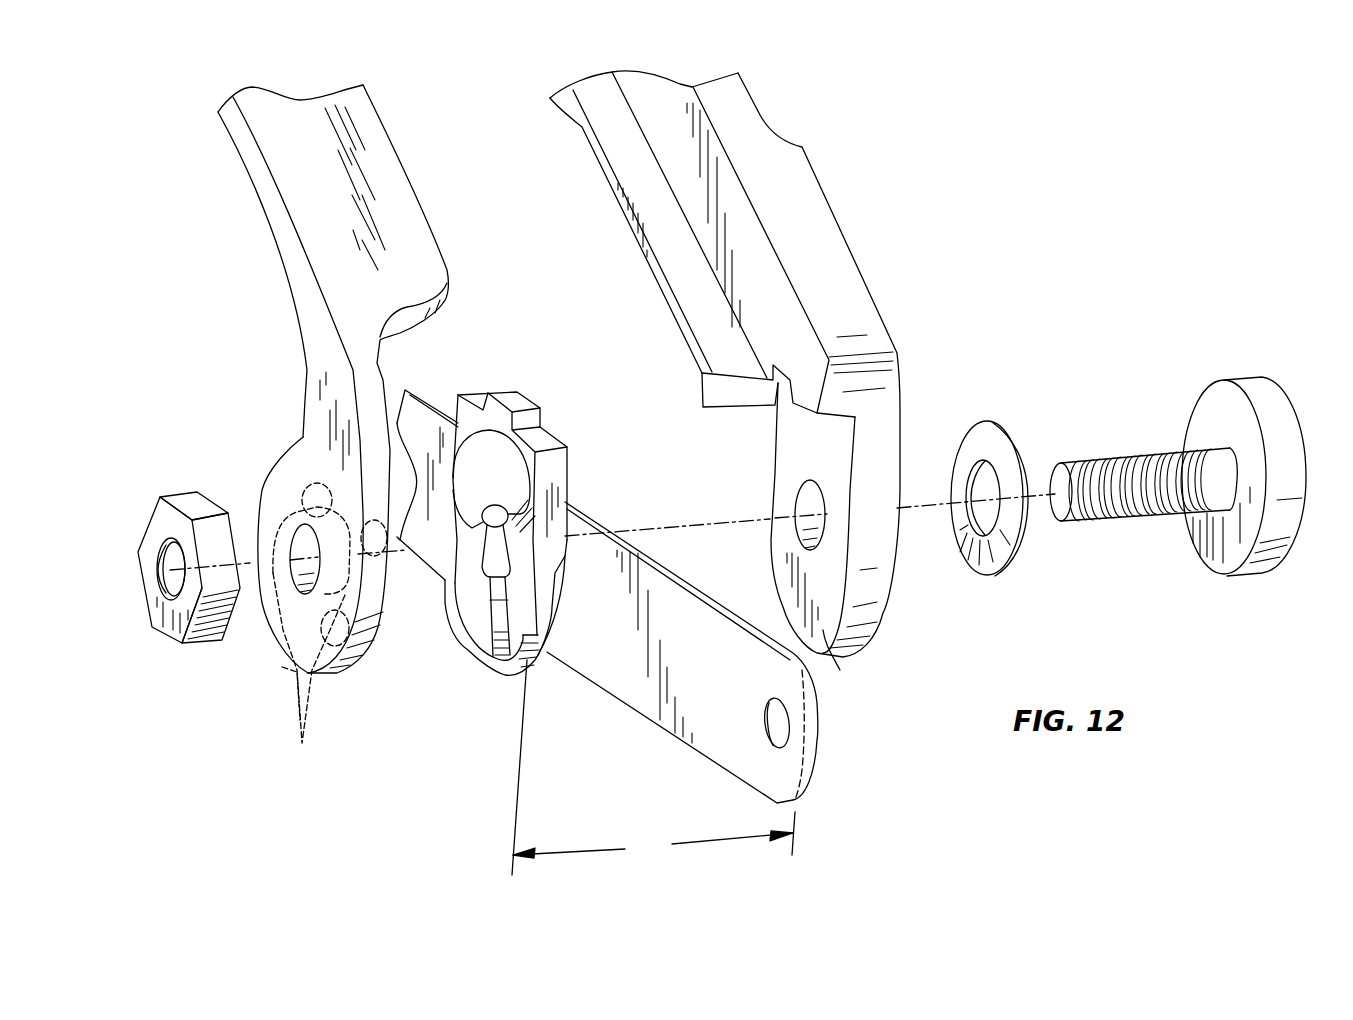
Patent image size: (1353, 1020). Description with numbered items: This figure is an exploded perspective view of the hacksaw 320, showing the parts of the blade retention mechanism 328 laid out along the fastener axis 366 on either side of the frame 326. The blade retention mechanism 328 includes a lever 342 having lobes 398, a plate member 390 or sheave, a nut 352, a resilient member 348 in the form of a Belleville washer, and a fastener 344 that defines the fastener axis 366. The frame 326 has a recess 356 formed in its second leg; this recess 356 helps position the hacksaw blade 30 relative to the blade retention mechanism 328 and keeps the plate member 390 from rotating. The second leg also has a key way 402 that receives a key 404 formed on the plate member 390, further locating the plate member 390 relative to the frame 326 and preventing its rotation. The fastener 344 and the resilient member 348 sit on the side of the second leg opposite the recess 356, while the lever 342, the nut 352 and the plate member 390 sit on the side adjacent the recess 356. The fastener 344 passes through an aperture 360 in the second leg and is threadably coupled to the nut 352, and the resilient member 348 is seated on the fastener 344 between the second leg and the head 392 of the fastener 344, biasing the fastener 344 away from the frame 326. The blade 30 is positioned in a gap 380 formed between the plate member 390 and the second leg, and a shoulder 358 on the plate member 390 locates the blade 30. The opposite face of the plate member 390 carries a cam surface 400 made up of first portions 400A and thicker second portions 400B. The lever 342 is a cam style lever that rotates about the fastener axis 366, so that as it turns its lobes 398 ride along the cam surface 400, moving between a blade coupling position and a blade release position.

The hacksaw blade 30 is at (703, 688).
The hacksaw 320 is at (723, 392).
The frame 326 is at (582, 167).
The blade retention mechanism 328 is at (301, 429).
The lever 342 is at (282, 140).
The fastener 344 is at (1178, 501).
The resilient member 348 is at (983, 437).
The nut 352 is at (163, 515).
The recess 356 is at (840, 670).
The shoulder 358 is at (510, 617).
The aperture 360 is at (810, 497).
The fastener axis 366 is at (923, 503).
The gap 380 is at (653, 767).
The plate member 390 is at (467, 648).
The head 392 is at (1250, 543).
The lobes 398 is at (303, 720).
The cam surface 400 is at (532, 533).
The first portions 400A is at (495, 637).
The second portions 400B is at (465, 478).
The key way 402 is at (775, 383).
The key 404 is at (523, 397).